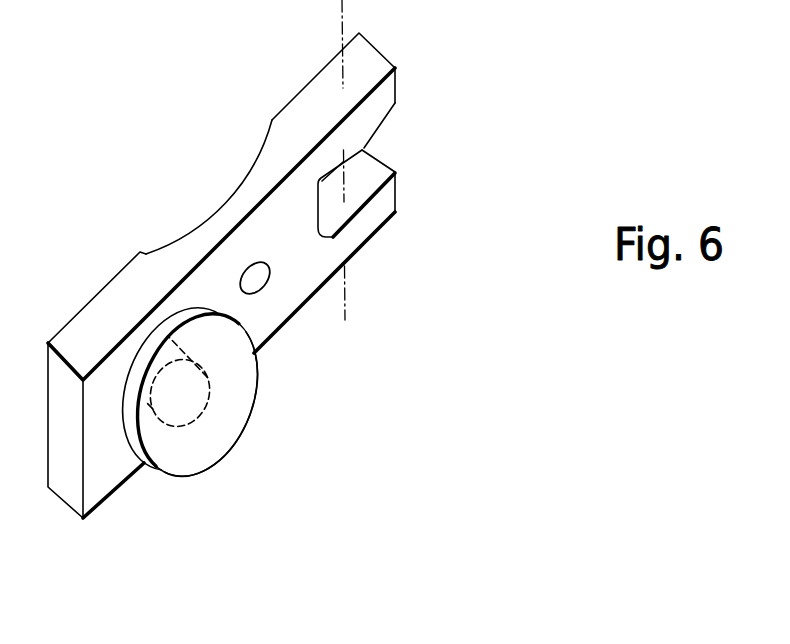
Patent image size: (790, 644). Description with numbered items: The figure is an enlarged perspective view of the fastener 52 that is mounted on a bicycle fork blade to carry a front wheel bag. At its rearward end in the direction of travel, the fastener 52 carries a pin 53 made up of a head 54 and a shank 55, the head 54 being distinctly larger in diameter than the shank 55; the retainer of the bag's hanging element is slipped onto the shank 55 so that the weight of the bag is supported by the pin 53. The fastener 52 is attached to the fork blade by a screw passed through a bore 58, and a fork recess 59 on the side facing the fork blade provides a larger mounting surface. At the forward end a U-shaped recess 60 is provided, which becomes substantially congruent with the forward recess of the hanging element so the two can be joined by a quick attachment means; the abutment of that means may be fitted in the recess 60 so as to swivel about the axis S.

The fastener 52 is at (318, 416).
The pin 53 is at (214, 532).
The head 54 is at (278, 485).
The shank 55 is at (322, 370).
The bore 58 is at (402, 275).
The fork recess 59 is at (200, 212).
The U-shaped recess 60 is at (472, 118).
The axis S is at (432, 2).